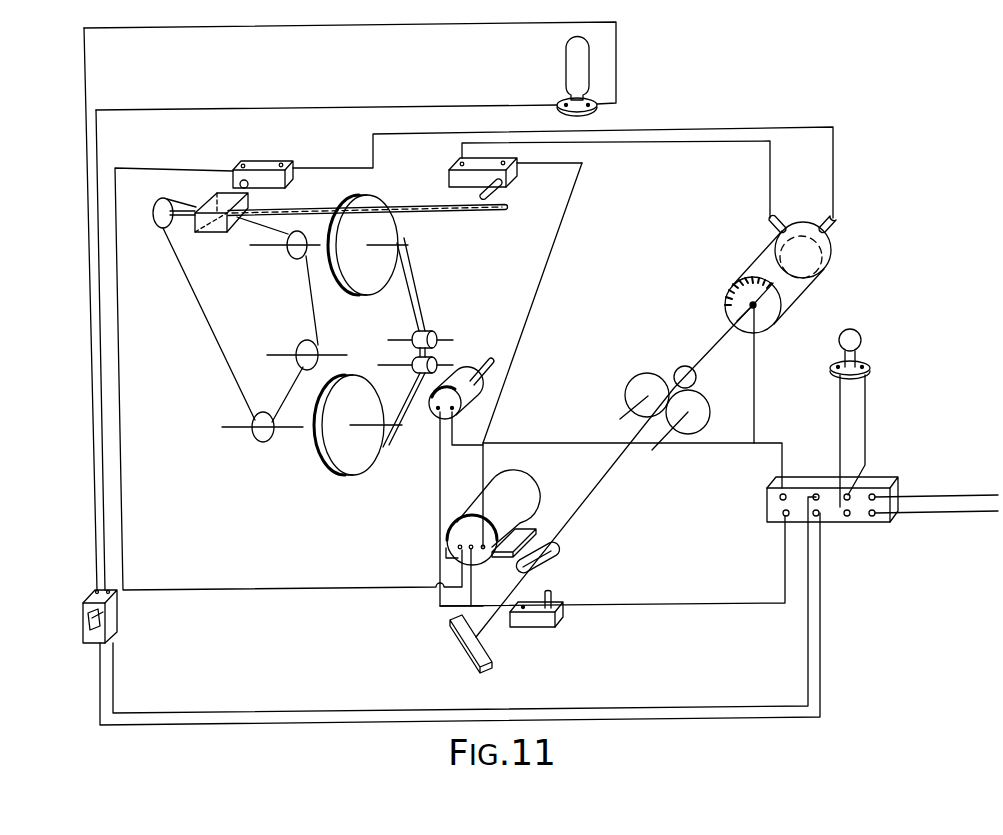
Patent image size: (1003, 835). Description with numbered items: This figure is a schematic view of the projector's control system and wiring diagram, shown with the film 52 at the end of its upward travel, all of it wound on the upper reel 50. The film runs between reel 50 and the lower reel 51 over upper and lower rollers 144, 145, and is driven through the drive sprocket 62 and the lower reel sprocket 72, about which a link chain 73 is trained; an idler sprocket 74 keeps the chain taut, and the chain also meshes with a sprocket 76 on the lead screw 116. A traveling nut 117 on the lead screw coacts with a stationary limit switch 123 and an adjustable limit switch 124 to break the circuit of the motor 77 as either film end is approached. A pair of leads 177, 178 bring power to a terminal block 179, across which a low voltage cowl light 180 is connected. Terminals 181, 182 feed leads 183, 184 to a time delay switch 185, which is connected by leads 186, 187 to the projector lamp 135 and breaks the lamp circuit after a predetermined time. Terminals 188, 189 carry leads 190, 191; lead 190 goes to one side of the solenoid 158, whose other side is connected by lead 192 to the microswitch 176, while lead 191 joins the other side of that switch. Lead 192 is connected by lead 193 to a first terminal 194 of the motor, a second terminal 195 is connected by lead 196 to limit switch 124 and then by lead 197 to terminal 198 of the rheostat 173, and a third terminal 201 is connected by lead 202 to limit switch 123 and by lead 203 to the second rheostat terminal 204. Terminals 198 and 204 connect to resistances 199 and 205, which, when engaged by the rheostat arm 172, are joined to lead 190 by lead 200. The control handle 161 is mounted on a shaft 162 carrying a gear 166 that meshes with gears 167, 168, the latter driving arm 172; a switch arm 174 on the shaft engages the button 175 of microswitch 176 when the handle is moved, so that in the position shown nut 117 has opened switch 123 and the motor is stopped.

The reel 50 is at (352, 283).
The lower reel 51 is at (357, 475).
The film 52 is at (418, 292).
The drive sprocket 62 is at (289, 256).
The sprocket 72 is at (262, 443).
The link belt or chain 73 is at (206, 327).
The idler sprocket 74 is at (297, 365).
The sprocket 76 is at (157, 226).
The motor 77 is at (525, 490).
The lead screw 116 is at (305, 207).
The traveling nut 117 is at (216, 232).
The stationary limit switch 123 is at (262, 161).
The adjustable limit switch 124 is at (449, 178).
The lamp 135 is at (566, 68).
The upper roller 144 is at (440, 331).
The lower roller 145 is at (440, 360).
The solenoid 158 is at (465, 397).
The control handle 161 is at (471, 662).
The shaft 162 is at (587, 528).
The gear 166 is at (690, 434).
The gear 167 is at (628, 390).
The gear 168 is at (696, 373).
The arm 172 is at (763, 318).
The rheostat 173 is at (833, 250).
The switch arm 174 is at (547, 538).
The button 175 is at (553, 593).
The microswitch 176 is at (545, 627).
The lead 177 is at (968, 495).
The lead 178 is at (968, 514).
The terminal block 179 is at (860, 522).
The low voltage cowl light 180 is at (872, 368).
The terminal 181 is at (816, 493).
The terminal 182 is at (819, 518).
The lead 183 is at (807, 614).
The lead 184 is at (821, 615).
The time delay switch 185 is at (108, 624).
The lead 186 is at (90, 452).
The lead 187 is at (110, 466).
The terminal 188 is at (765, 499).
The terminal 189 is at (783, 517).
The lead 190 is at (775, 430).
The lead 191 is at (708, 602).
The lead 192 is at (440, 472).
The lead 193 is at (474, 591).
The terminal 194 is at (462, 546).
The terminal 195 is at (484, 545).
The lead 196 is at (543, 290).
The lead 197 is at (632, 146).
The terminal 198 is at (770, 224).
The resistance 199 is at (729, 298).
The lead 200 is at (757, 381).
The terminal 201 is at (449, 540).
The lead 202 is at (120, 303).
The lead 203 is at (650, 132).
The terminal 204 is at (838, 228).
The resistance 205 is at (776, 298).